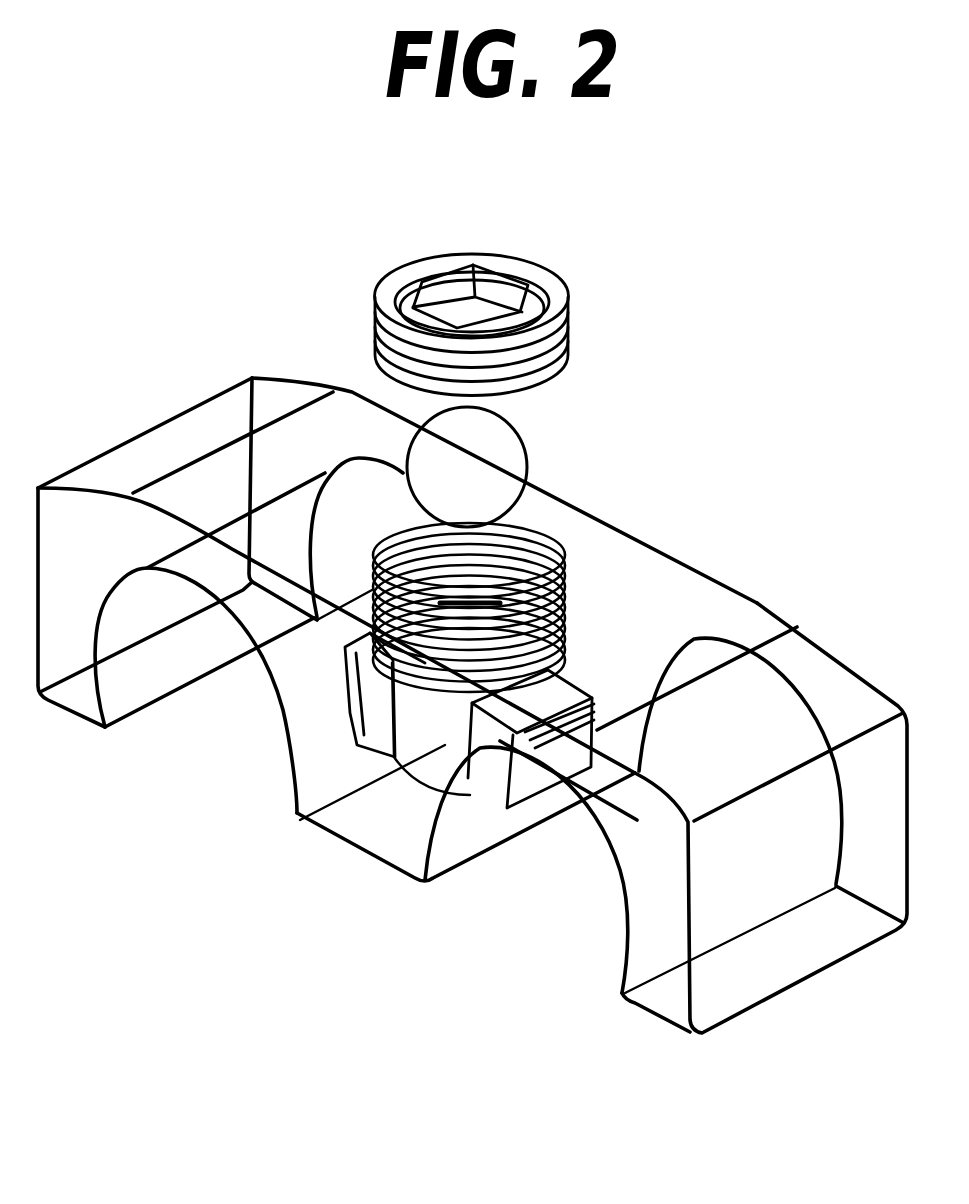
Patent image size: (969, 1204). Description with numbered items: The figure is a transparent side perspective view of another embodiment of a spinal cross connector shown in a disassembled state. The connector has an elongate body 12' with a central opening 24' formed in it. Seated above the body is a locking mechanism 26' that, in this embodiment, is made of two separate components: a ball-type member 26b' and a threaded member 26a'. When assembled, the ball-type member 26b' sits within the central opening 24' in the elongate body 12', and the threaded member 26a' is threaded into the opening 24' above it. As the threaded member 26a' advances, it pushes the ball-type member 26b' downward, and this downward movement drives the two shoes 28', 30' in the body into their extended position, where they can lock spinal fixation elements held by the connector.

The elongate body 12' is at (472, 705).
The central opening 24' is at (533, 558).
The locking mechanism 26' is at (500, 369).
The threaded member 26a' is at (387, 303).
The ball-type member 26b' is at (381, 414).
The shoe 28' is at (301, 722).
The shoe 30' is at (531, 829).